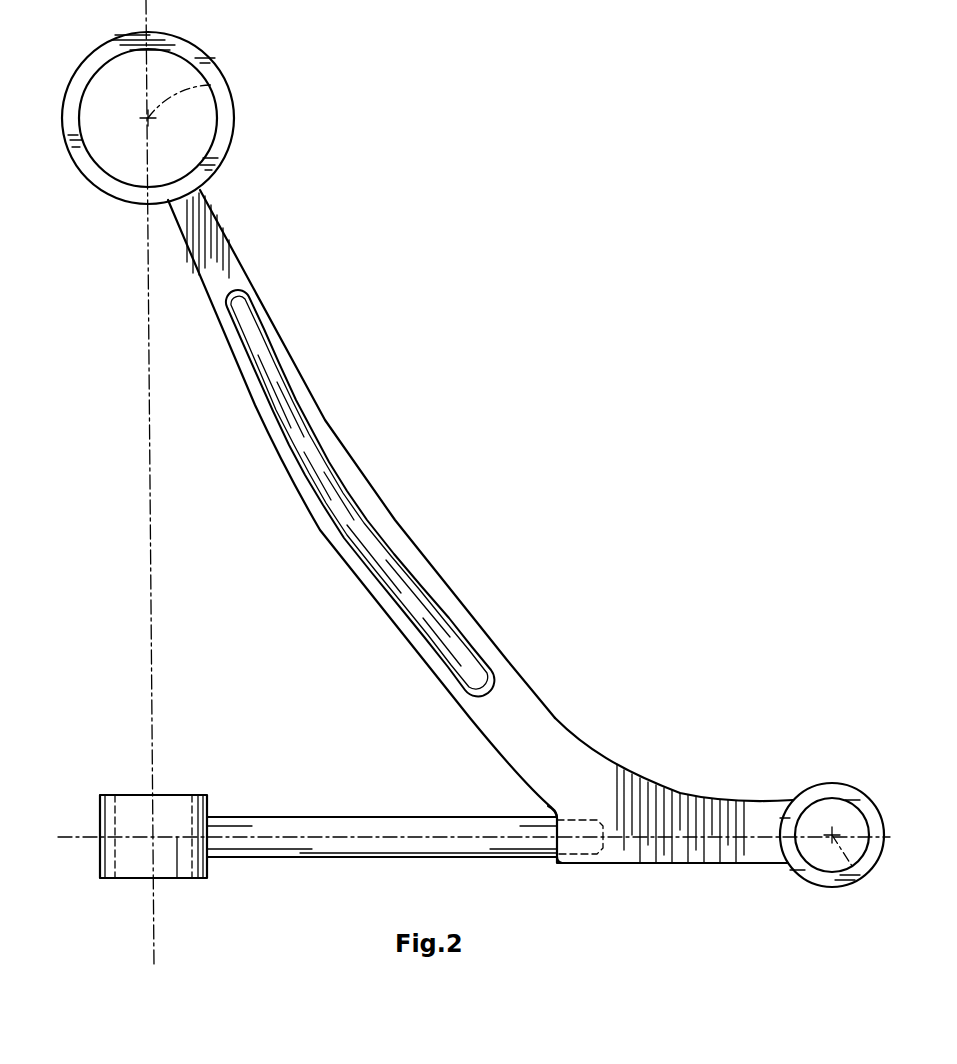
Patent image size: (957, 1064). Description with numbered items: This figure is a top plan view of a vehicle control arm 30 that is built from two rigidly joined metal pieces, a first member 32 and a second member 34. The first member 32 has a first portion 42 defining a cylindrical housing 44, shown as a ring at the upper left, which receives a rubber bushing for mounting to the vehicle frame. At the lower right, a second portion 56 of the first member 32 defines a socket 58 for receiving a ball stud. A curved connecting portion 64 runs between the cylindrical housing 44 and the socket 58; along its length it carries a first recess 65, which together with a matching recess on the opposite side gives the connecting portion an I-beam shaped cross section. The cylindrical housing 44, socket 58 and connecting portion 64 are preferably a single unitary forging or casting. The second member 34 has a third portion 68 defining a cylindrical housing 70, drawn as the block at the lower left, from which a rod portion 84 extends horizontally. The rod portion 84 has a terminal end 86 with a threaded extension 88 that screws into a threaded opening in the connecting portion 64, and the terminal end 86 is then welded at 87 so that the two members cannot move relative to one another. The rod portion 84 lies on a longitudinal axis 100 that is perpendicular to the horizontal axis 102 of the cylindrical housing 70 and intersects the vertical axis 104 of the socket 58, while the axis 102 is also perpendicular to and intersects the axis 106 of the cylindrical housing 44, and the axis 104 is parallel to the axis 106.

The control arm 30 is at (435, 422).
The first member 32 is at (587, 740).
The second member 34 is at (300, 852).
The first portion 42 is at (203, 65).
The cylindrical housing 44 is at (80, 78).
The second portion 56 is at (808, 880).
The socket 58 is at (842, 790).
The connecting portion 64 is at (508, 682).
The first recess 65 is at (318, 477).
The third portion 68 is at (110, 878).
The cylindrical housing 70 is at (108, 812).
The rod portion 84 is at (495, 845).
The terminal end 86 is at (547, 838).
The weld 87 is at (553, 812).
The threaded extension 88 is at (590, 850).
The longitudinal axis 100 is at (372, 838).
The horizontal axis 102 is at (154, 920).
The vertical axis 104 is at (852, 866).
The axis 106 is at (212, 85).